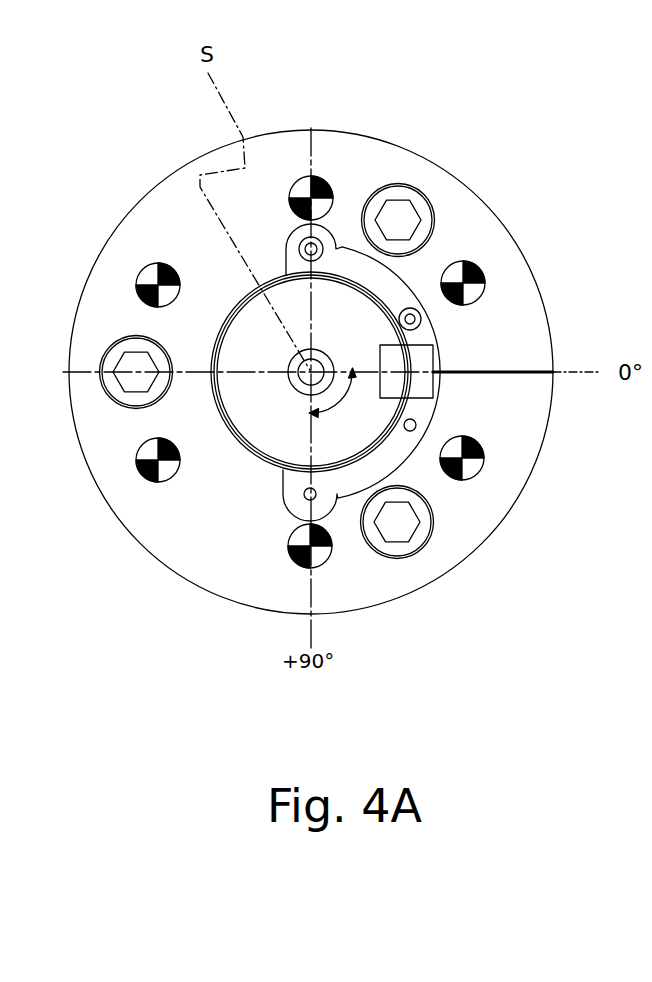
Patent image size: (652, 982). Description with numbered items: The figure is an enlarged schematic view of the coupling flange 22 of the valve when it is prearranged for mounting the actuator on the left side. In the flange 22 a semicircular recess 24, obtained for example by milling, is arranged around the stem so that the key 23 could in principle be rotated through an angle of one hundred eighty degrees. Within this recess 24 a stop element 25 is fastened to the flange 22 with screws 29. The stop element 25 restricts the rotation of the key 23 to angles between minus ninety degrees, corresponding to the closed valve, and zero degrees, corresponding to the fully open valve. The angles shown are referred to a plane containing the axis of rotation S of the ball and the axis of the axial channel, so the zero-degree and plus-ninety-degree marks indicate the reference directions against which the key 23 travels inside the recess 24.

The flange 22 is at (187, 525).
The key 23 is at (425, 385).
The semicircular recess 24 is at (398, 455).
The stop element 25 is at (397, 287).
The screws 29 is at (320, 245).